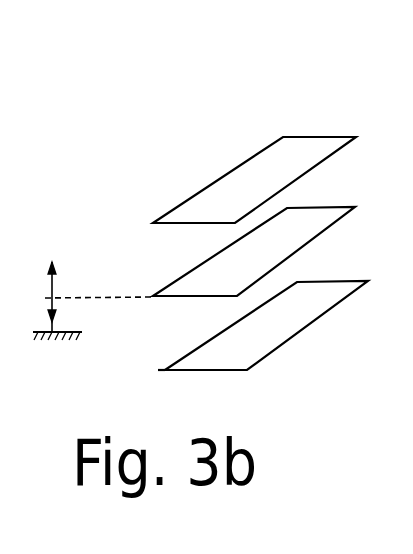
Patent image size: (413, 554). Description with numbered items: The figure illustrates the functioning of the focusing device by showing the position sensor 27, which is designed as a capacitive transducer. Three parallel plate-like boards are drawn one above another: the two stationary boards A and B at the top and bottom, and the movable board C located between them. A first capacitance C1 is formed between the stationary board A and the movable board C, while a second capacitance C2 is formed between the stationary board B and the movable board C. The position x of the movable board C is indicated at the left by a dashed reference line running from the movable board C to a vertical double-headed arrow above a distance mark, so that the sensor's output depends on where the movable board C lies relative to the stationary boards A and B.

The position sensor 27 is at (228, 148).
The stationary board A is at (270, 171).
The stationary board B is at (280, 317).
The movable board C is at (272, 242).
The first capacitance C1 is at (99, 272).
The second capacitance C2 is at (146, 367).
The position of the movable board x is at (67, 334).